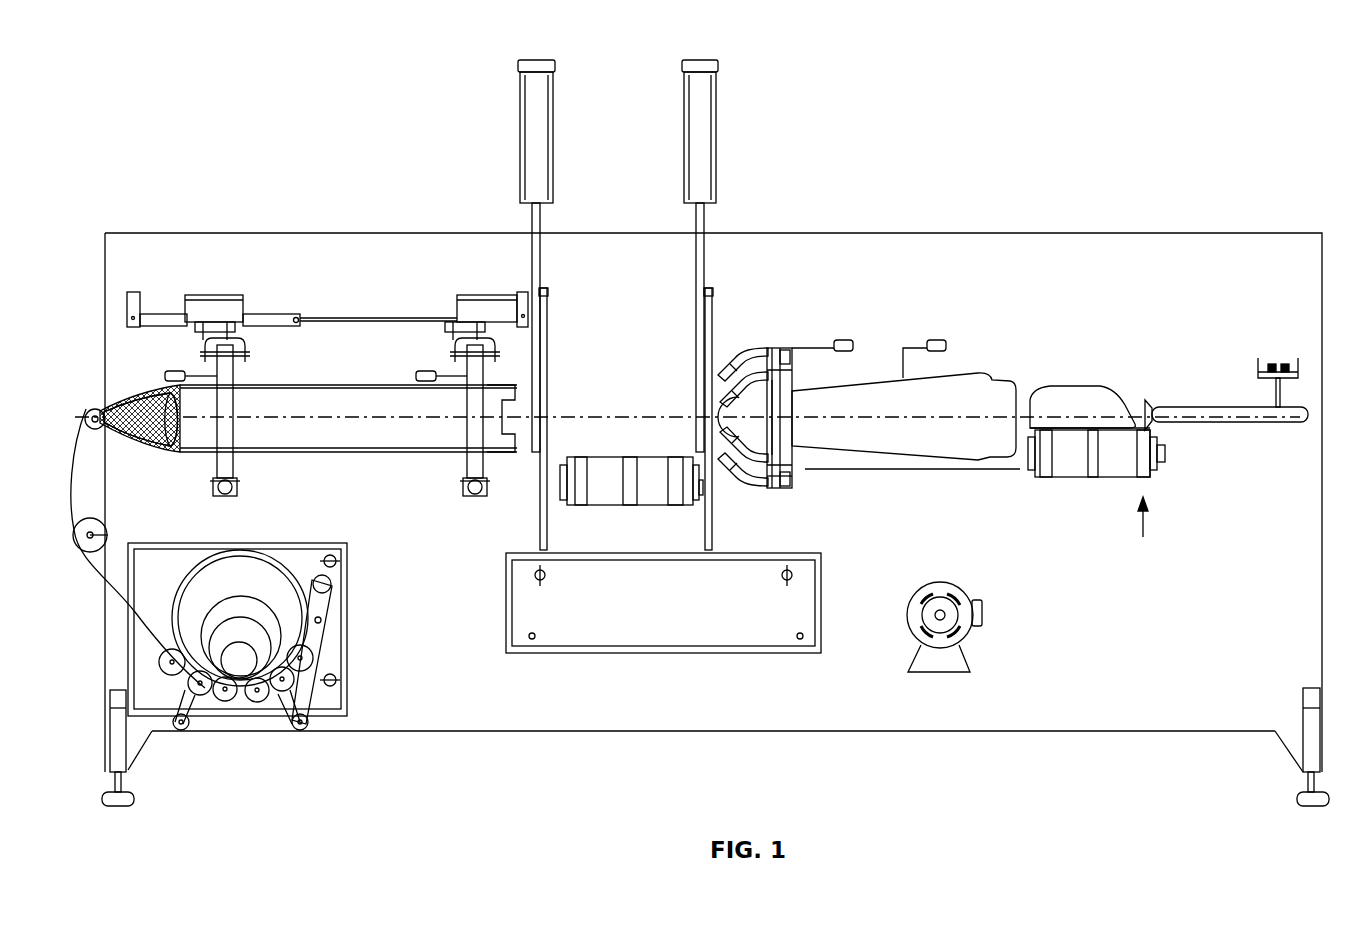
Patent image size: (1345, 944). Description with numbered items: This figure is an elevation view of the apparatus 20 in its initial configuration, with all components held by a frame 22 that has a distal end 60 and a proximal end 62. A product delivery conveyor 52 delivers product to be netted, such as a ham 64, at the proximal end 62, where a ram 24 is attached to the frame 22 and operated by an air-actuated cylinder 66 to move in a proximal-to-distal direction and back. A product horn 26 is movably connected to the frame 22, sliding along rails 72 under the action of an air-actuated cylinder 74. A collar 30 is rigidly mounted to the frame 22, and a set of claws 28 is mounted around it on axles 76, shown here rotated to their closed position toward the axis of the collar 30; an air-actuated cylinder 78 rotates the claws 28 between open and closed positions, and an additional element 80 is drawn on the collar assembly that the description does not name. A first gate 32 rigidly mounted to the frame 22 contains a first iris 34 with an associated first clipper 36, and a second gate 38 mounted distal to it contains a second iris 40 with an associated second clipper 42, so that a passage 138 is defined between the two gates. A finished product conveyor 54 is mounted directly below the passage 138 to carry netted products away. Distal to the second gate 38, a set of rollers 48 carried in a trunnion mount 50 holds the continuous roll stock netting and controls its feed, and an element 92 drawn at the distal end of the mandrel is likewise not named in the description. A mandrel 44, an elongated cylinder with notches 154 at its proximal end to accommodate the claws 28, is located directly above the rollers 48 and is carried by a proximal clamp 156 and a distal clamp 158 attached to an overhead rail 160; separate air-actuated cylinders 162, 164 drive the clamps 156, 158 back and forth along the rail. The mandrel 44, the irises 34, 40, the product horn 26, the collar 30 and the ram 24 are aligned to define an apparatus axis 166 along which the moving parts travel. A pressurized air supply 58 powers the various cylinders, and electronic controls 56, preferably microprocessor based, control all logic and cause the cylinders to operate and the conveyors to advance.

The apparatus 20 is at (170, 136).
The frame 22 is at (1094, 232).
The ram 24 is at (1149, 409).
The product horn 26 is at (948, 383).
The claws 28 is at (768, 352).
The collar 30 is at (789, 477).
The first gate 32 is at (714, 290).
The first iris 34 is at (698, 411).
The first clipper 36 is at (704, 103).
The second gate 38 is at (549, 298).
The second iris 40 is at (550, 330).
The second clipper 42 is at (540, 103).
The mandrel 44 is at (352, 444).
The set of rollers 48 is at (300, 662).
The trunnion mount 50 is at (262, 586).
The product delivery conveyor 52 is at (1067, 478).
The finished product conveyor 54 is at (609, 463).
The electronic controls 56 is at (678, 616).
The pressurized air supply 58 is at (914, 614).
The distal end 60 is at (158, 232).
The proximal end 62 is at (1008, 392).
The ham 64 is at (1068, 391).
The air-actuated cylinder 66 is at (1278, 358).
The rails 72 is at (975, 470).
The air-actuated cylinder 74 is at (939, 339).
The axles 76 is at (766, 348).
The air-actuated cylinder 78 is at (845, 339).
The plate 80 is at (788, 372).
The funnel 92 is at (138, 418).
The passage 138 is at (657, 355).
The notches 154 is at (505, 411).
The proximal clamp 156 is at (470, 463).
The distal clamp 158 is at (232, 463).
The overhead rail 160 is at (332, 318).
The air-actuated cylinder 162 is at (423, 370).
The air-actuated cylinder 164 is at (173, 370).
The apparatus axis 166 is at (1218, 423).